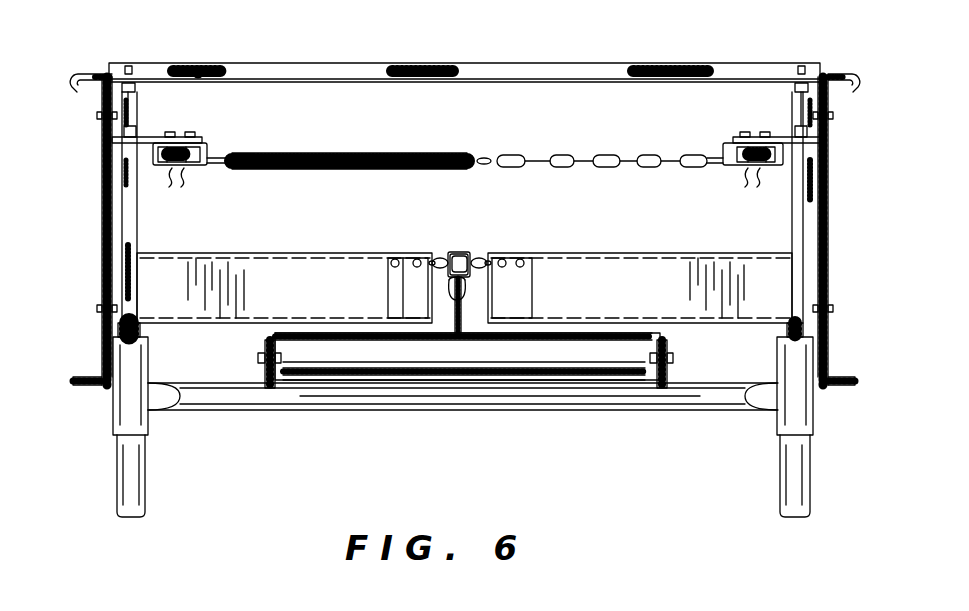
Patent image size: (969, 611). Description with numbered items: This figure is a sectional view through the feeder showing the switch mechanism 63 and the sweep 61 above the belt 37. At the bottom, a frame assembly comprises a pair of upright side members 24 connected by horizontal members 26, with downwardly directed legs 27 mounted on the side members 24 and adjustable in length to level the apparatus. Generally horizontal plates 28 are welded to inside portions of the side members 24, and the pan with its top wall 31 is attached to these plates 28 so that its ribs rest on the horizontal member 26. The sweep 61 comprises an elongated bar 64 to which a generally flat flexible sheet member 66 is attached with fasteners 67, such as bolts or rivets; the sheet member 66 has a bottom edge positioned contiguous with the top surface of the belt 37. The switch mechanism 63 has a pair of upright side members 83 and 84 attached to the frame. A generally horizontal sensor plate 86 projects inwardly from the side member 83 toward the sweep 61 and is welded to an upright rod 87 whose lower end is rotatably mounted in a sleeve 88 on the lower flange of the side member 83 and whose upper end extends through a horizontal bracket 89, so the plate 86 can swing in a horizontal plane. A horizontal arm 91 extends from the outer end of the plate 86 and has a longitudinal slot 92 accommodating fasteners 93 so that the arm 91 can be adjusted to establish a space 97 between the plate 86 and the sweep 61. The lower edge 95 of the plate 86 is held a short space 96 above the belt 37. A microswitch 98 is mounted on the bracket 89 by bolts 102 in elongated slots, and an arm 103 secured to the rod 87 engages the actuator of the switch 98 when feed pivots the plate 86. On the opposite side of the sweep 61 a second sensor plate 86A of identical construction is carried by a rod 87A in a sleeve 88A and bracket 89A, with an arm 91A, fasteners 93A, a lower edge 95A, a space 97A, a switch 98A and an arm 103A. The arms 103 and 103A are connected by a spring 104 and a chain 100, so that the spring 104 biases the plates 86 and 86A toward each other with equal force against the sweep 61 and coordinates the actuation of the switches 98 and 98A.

The upright side member 24 is at (130, 418).
The horizontal member 26 is at (698, 393).
The leg 27 is at (133, 481).
The horizontal plate 28 is at (265, 373).
The top wall 31 is at (570, 383).
The belt 37 is at (636, 333).
The sweep 61 is at (458, 246).
The switch mechanism 63 is at (338, 118).
The bar 64 is at (469, 254).
The flexible sheet member 66 is at (462, 318).
The fastener 67 is at (468, 290).
The upright side member 83 is at (102, 196).
The upright side member 84 is at (828, 232).
The plate 86 is at (242, 264).
The sensor plate 86A is at (668, 262).
The rod 87 is at (137, 232).
The rod 87A is at (792, 234).
The sleeve 88 is at (140, 331).
The sleeve 88A is at (787, 331).
The horizontal bracket 89 is at (148, 137).
The horizontal bracket 89A is at (782, 134).
The horizontal arm 91 is at (437, 258).
The horizontal arm 91A is at (481, 258).
The longitudinal slot 92 is at (402, 258).
The fastener 93 is at (417, 268).
The fastener 93A is at (502, 258).
The lower edge 95 is at (292, 333).
The lower edge 95A is at (600, 323).
The space 96 is at (332, 333).
The space 97 is at (447, 322).
The space 97A is at (478, 325).
The microswitch 98 is at (205, 146).
The switch 98A is at (748, 157).
The chain 100 is at (565, 155).
The bolt 102 is at (170, 132).
The arm 103 is at (200, 170).
The arm 103A is at (737, 170).
The spring 104 is at (428, 153).